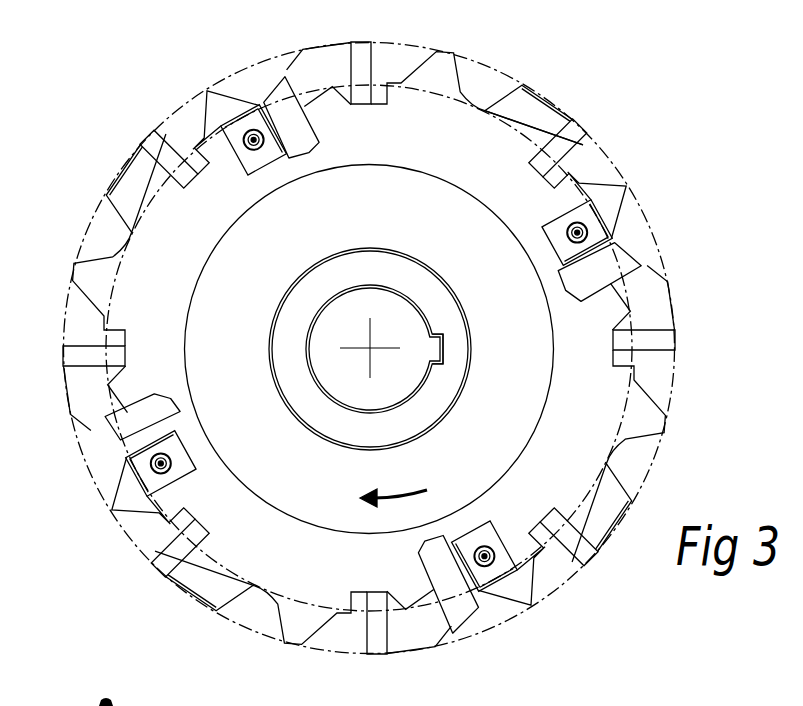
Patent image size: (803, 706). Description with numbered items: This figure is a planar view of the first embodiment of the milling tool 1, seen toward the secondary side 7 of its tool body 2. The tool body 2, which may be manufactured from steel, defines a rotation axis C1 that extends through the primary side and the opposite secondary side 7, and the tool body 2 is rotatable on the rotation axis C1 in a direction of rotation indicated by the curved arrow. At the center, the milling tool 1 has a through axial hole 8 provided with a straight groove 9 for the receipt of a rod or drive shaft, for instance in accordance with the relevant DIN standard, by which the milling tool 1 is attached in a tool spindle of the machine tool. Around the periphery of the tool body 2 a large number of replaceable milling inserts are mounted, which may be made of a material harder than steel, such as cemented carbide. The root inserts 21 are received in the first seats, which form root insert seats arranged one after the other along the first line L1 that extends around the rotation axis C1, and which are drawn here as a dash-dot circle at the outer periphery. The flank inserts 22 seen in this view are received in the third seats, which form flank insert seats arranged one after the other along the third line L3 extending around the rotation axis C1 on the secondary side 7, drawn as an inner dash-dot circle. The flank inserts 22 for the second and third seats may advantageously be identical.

The milling tool 1 is at (614, 86).
The tool body 2 is at (435, 80).
The secondary side 7 is at (497, 152).
The through axial hole 8 is at (393, 310).
The straight groove 9 is at (437, 343).
The root insert 21 is at (165, 145).
The flank insert 22 is at (256, 118).
The rotation axis C1 is at (372, 347).
The first line L1 is at (85, 232).
The third line L3 is at (152, 193).